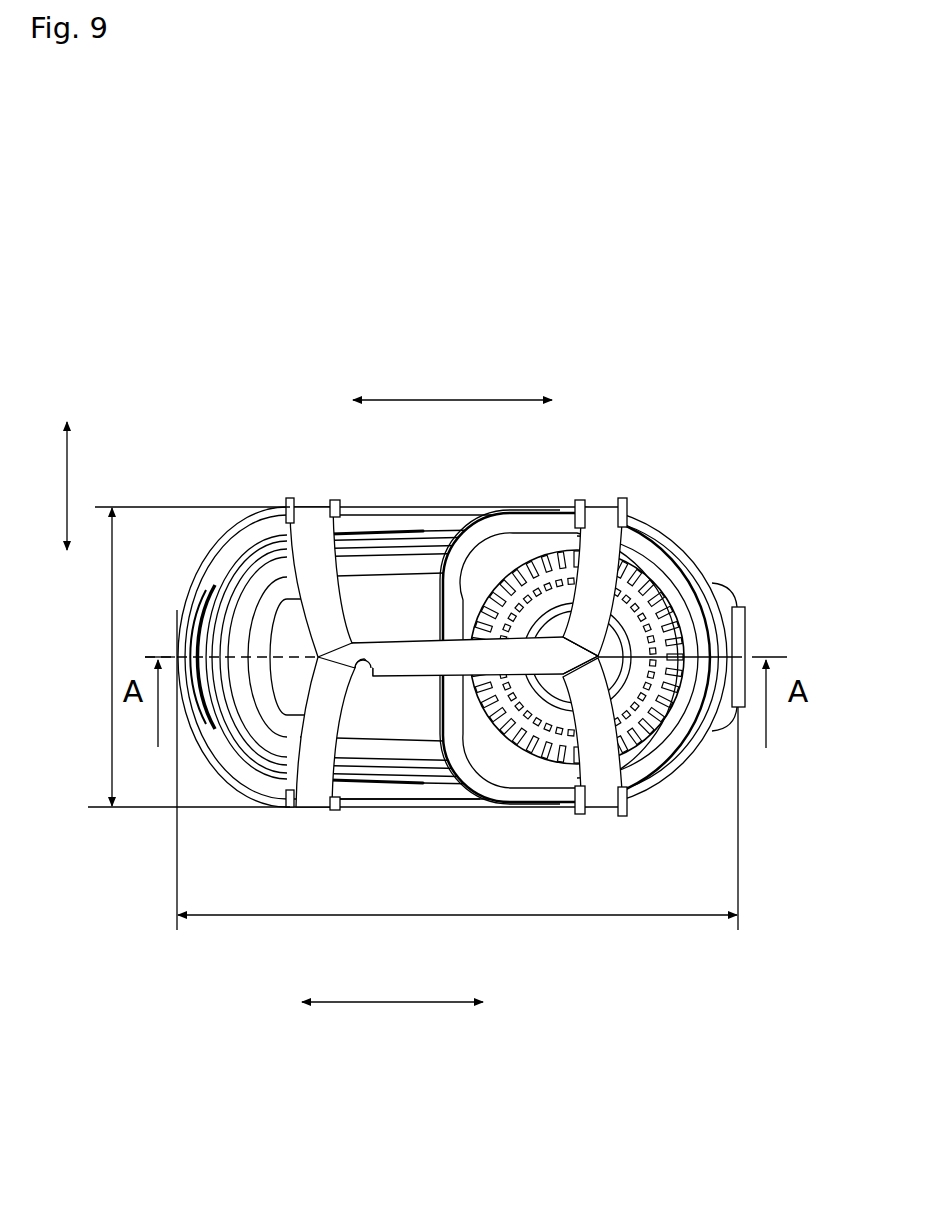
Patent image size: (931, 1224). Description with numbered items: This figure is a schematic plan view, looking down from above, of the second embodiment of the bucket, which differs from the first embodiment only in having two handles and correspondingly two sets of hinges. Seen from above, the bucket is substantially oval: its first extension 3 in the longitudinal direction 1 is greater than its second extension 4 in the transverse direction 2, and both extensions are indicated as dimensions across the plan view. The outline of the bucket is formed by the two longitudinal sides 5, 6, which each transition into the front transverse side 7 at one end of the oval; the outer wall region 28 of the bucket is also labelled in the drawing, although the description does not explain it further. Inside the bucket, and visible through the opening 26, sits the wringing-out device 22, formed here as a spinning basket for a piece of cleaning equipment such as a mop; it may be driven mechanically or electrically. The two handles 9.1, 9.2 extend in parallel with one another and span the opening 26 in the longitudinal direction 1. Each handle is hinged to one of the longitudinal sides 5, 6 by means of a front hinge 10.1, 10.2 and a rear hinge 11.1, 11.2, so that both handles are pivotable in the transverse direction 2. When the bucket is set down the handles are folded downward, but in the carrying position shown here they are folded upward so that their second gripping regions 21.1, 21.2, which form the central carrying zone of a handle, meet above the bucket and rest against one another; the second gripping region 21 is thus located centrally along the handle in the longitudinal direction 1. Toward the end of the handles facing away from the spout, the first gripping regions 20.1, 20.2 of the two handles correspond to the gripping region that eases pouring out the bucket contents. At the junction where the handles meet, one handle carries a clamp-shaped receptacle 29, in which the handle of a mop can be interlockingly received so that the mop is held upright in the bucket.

The longitudinal direction 1 is at (392, 1002).
The transverse direction 2 is at (67, 470).
The first extension 3 is at (523, 915).
The second extension 4 is at (112, 645).
The longitudinal side 5 is at (432, 788).
The longitudinal side 6 is at (453, 528).
The front transverse side 7 is at (250, 582).
The handle 9.1 is at (602, 753).
The handle 9.2 is at (603, 572).
The front hinge 10.1 is at (289, 813).
The front hinge 10.2 is at (602, 795).
The rear hinge 11.1 is at (290, 498).
The rear hinge 11.2 is at (627, 498).
The left hub joint 20.1 is at (336, 667).
The right hub joint 20.2 is at (580, 667).
The second gripping region 21 is at (448, 400).
The second gripping region 21.1 is at (335, 645).
The second gripping region 21.2 is at (580, 647).
The wringing-out device 22 is at (563, 525).
The opening 26 is at (416, 609).
The housing outer wall 28 is at (413, 512).
The clamp-shaped receptacle 29 is at (363, 663).